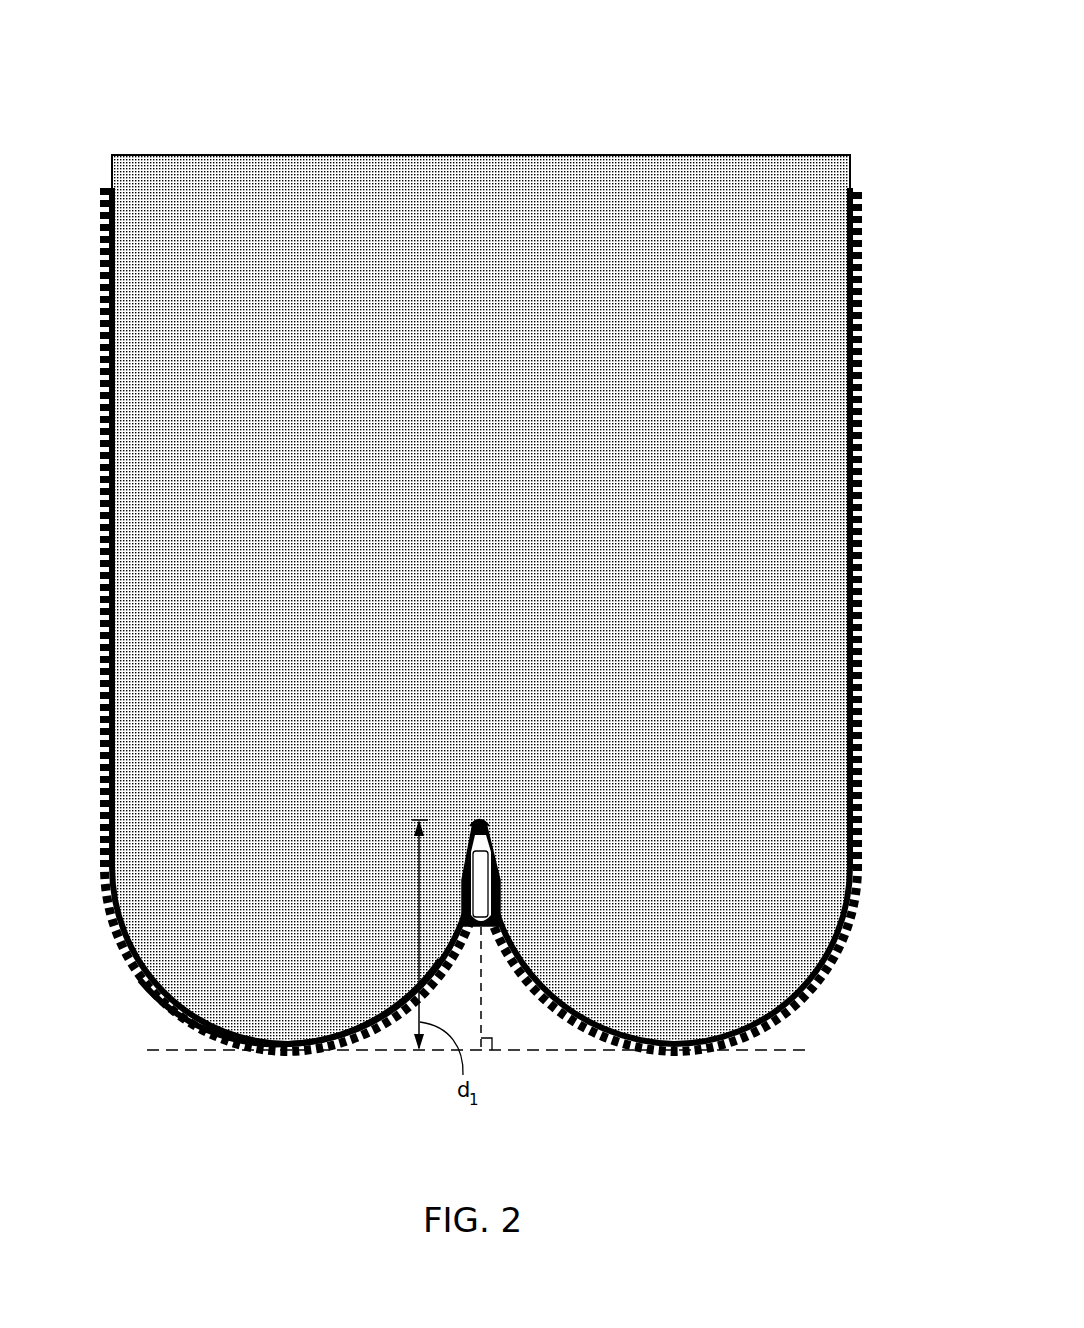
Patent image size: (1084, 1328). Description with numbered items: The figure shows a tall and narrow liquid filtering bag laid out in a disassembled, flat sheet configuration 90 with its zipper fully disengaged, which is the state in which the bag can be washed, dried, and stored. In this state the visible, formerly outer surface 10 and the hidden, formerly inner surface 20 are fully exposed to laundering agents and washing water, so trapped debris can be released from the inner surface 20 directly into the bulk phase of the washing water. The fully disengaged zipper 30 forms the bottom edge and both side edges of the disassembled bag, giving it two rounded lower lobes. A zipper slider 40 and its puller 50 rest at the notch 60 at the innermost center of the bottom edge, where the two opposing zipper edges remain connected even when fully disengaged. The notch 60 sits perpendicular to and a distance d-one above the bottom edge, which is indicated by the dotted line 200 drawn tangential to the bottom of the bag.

The formerly outer surface 10 is at (323, 193).
The formerly inner surface 20 is at (470, 156).
The zipper 30 is at (275, 1052).
The zipper slider 40 is at (480, 843).
The puller 50 is at (482, 905).
The notch 60 is at (461, 819).
The sheet configuration 90 is at (882, 569).
The dotted line 200 is at (382, 1050).